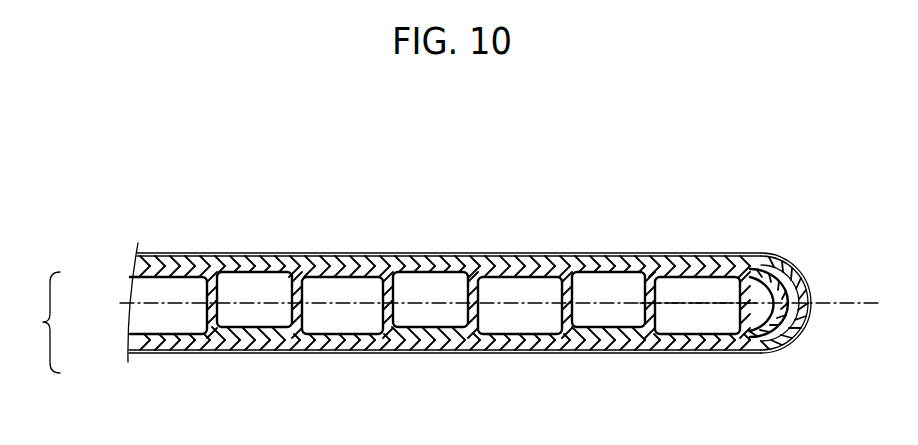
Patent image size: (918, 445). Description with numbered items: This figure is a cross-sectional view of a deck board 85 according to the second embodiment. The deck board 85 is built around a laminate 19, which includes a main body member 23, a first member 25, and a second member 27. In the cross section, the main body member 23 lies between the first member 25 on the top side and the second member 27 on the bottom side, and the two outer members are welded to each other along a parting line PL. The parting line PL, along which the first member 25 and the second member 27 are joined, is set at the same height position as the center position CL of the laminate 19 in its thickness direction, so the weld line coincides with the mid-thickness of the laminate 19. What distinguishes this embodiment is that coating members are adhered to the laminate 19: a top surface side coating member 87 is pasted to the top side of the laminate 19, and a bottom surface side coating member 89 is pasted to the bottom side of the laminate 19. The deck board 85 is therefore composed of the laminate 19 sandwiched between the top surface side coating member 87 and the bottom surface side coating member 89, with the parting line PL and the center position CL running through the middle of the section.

The deck board 85 is at (414, 276).
The top surface side coating member 87 is at (272, 252).
The bottom surface side coating member 89 is at (263, 353).
The laminate 19 is at (383, 318).
The first member 25 is at (137, 272).
The main body member 23 is at (165, 312).
The second member 27 is at (137, 342).
The center position CL is at (688, 303).
The parting line PL is at (500, 288).